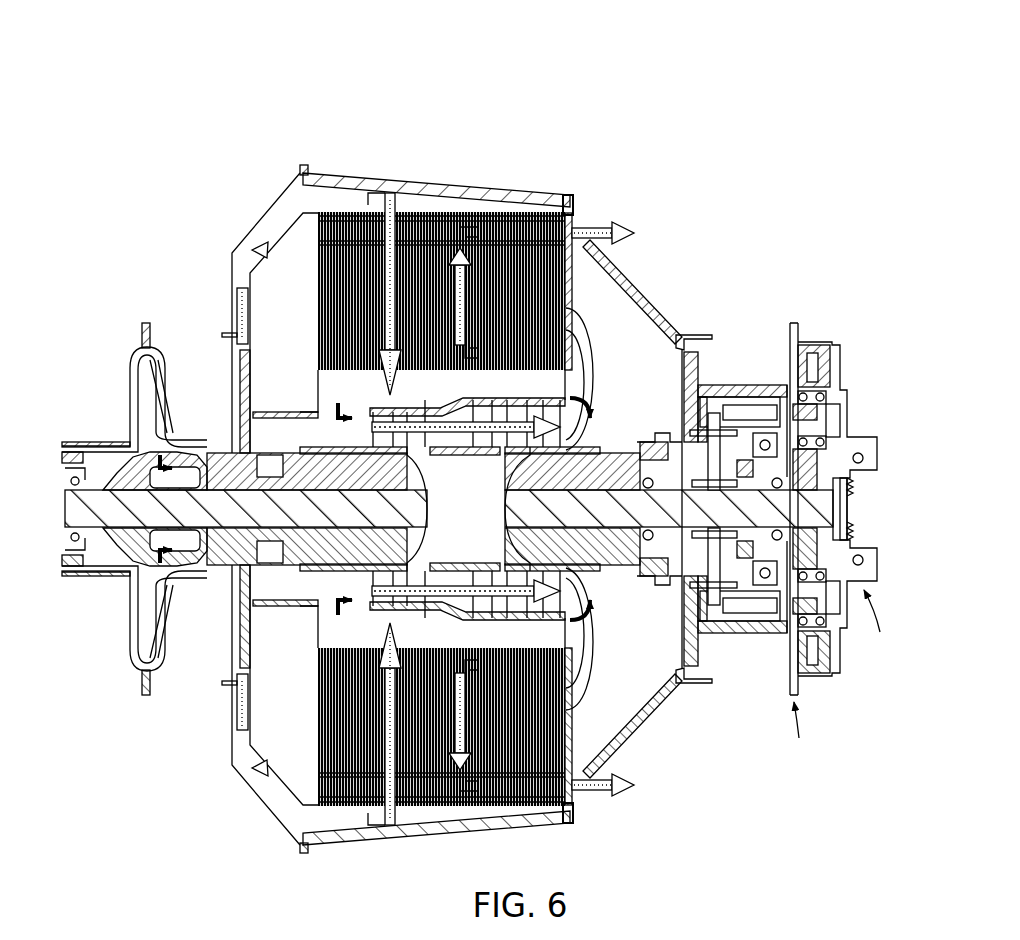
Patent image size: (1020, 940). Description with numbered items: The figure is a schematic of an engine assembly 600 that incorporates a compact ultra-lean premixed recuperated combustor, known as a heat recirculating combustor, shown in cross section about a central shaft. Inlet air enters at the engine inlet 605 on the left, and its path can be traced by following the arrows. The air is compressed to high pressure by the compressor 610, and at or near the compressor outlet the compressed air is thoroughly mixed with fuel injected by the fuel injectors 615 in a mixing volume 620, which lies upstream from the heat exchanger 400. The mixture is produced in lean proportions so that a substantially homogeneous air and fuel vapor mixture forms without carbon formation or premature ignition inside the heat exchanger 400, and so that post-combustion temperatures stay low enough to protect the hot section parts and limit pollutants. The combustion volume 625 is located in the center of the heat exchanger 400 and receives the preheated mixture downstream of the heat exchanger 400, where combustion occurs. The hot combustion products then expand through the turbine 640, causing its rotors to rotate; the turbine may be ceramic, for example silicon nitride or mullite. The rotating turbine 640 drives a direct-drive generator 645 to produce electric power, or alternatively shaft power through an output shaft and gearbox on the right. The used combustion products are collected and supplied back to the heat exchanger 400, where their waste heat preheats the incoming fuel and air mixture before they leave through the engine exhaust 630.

The engine assembly 600 is at (455, 83).
The engine inlet 605 is at (79, 446).
The compressor 610 is at (192, 592).
The fuel injectors 615 is at (230, 790).
The mixing volume 620 is at (333, 193).
The combustion volume 625 is at (549, 385).
The engine exhaust 630 is at (658, 194).
The turbine 640 is at (392, 620).
The generator 645 is at (722, 644).
The heat exchanger 400 is at (426, 257).